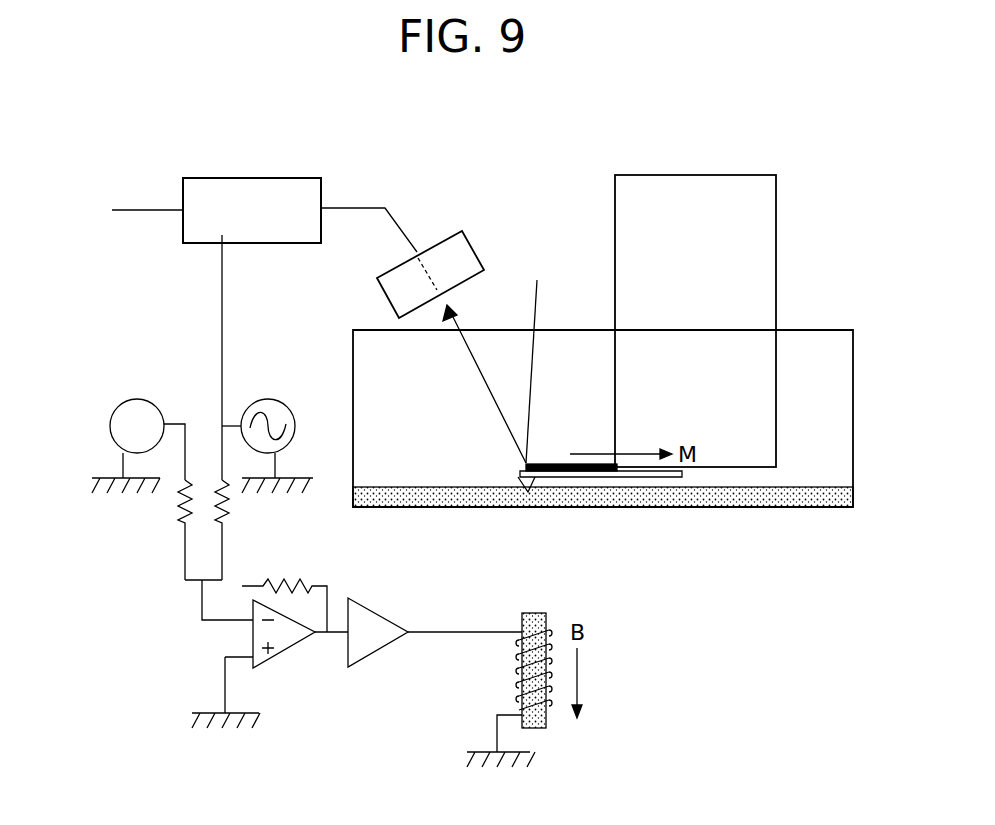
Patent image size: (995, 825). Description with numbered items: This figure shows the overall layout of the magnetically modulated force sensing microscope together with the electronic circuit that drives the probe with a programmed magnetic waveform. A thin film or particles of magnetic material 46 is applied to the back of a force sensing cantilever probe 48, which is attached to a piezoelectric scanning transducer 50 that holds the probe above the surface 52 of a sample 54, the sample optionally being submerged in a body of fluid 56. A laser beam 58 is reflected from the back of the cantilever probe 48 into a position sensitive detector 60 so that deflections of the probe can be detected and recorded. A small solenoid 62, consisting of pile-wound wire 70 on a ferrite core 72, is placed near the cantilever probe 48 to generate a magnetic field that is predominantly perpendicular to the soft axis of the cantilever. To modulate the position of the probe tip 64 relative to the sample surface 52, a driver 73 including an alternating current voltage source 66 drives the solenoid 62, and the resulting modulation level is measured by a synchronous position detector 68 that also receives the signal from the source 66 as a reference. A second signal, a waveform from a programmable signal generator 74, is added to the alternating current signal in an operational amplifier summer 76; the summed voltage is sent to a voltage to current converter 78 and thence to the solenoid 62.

The magnetic material 46 is at (580, 471).
The force sensing cantilever probe 48 is at (623, 477).
The piezoelectric scanning transducer 50 is at (760, 262).
The surface of sample 52 is at (823, 487).
The sample 54 is at (793, 503).
The body of fluid 56 is at (828, 424).
The laser beam 58 is at (540, 290).
The position sensitive detector 60 is at (478, 250).
The solenoid 62 is at (488, 660).
The probe tip 64 is at (530, 480).
The alternating current voltage source 66 is at (268, 399).
The synchronous position detector 68 is at (236, 178).
The pile-wound wire 70 is at (520, 656).
The ferrite core 72 is at (520, 682).
The driver 73 is at (160, 558).
The programmable signal generator 74 is at (110, 425).
The operational amplifier summer 76 is at (277, 656).
The voltage to current converter 78 is at (370, 657).